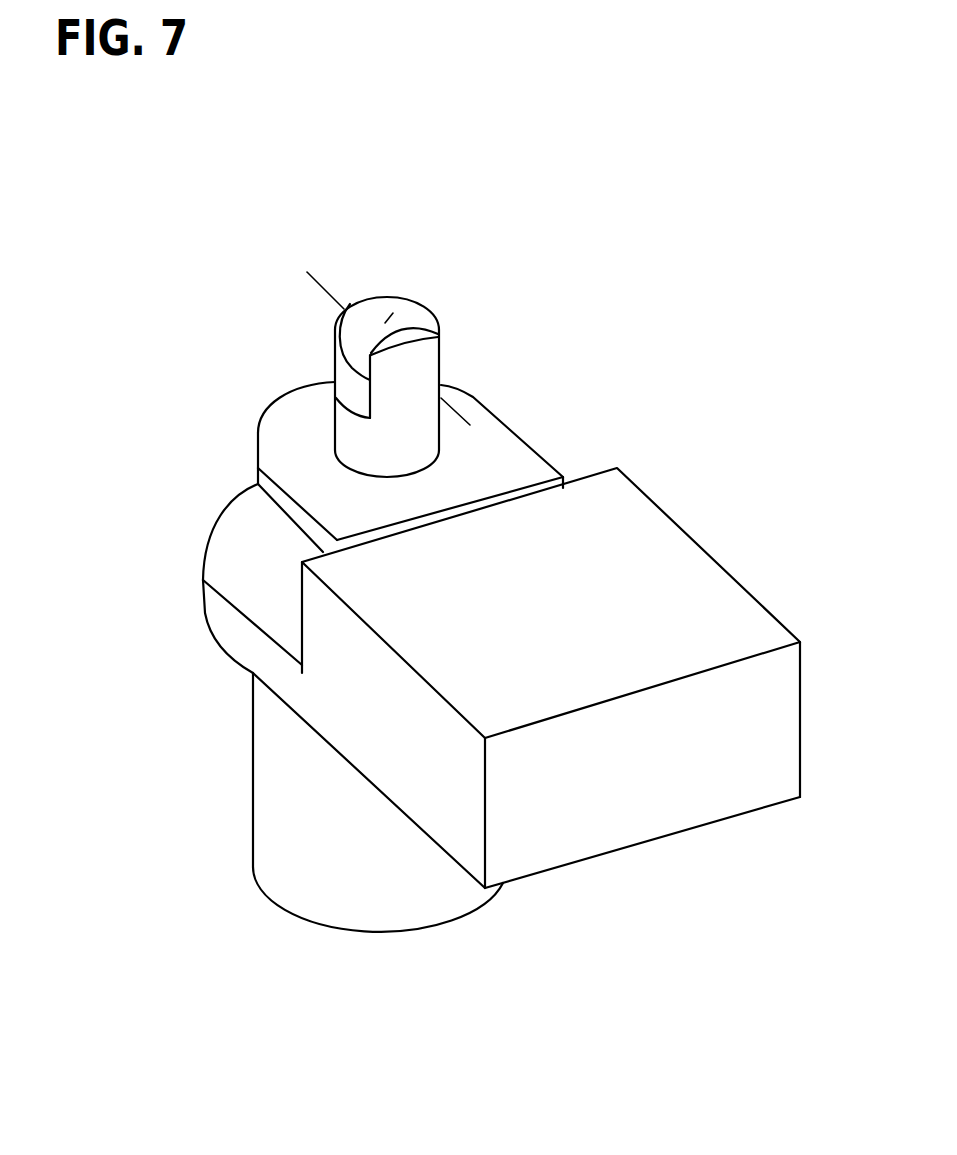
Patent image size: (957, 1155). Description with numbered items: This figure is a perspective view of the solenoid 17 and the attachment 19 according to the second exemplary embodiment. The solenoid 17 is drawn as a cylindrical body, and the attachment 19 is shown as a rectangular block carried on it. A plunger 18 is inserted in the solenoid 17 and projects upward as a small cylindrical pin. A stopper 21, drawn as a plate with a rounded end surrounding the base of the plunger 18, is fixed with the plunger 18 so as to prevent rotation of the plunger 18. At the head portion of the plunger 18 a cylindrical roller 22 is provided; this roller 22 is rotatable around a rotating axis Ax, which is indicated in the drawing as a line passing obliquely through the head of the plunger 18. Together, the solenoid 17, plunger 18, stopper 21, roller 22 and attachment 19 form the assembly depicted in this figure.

The solenoid 17 is at (332, 853).
The plunger 18 is at (457, 375).
The attachment 19 is at (627, 630).
The stopper 21 is at (300, 447).
The cylindrical roller 22 is at (403, 303).
The rotating axis Ax is at (345, 313).